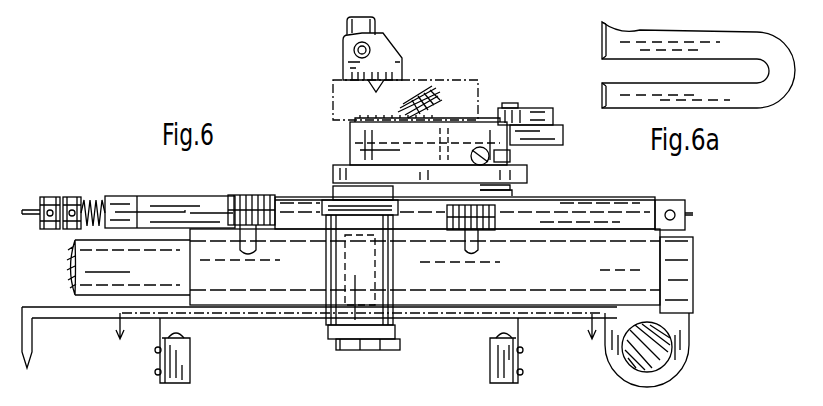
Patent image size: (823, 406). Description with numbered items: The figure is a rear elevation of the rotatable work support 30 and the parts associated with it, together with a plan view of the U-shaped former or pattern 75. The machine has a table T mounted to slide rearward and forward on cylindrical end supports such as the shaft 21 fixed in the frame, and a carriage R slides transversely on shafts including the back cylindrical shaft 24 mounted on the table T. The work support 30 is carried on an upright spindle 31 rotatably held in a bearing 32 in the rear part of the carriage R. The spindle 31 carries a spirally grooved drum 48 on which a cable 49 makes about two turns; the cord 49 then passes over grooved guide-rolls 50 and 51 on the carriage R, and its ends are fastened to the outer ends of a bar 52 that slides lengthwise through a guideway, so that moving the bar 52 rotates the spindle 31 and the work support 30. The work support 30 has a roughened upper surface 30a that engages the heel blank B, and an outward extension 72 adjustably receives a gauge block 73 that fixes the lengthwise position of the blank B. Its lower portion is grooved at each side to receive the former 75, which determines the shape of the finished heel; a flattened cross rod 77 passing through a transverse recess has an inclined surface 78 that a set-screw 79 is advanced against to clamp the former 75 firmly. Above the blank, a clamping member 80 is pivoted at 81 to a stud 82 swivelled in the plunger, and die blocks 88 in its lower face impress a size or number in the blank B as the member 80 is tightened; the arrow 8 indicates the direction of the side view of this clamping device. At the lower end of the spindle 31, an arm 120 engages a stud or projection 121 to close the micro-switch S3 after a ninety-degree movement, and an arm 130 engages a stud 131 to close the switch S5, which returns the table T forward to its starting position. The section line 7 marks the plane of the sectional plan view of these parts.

In FIG. 6, the arrow 8 is at (268, 76).
In FIG. 6, the stud 82 is at (346, 22).
In FIG. 6, the clamping member 80 is at (386, 49).
In FIG. 6, the pivot 81 is at (353, 51).
In FIG. 6, the die blocks 88 is at (378, 95).
In FIG. 6, the heel blank B is at (424, 86).
In FIG. 6, the roughened upper surface 30a is at (356, 120).
In FIG. 6, the work support 30 is at (350, 152).
In FIG. 6, the inclined surface 78 is at (430, 177).
In FIG. 6, the flattened cross rod 77 is at (471, 157).
In FIG. 6, the set-screw 79 is at (511, 156).
In FIG. 6, the gauge block 73 is at (530, 108).
In FIG. 6, the outward extension 72 is at (564, 133).
In FIG. 6, the former or pattern 75 is at (513, 196).
In FIG. 6a, the former or pattern 75 is at (728, 99).
In FIG. 6, the cable 49 is at (196, 195).
In FIG. 6, the grooved guide-roll 51 is at (230, 195).
In FIG. 6, the grooved guide-roll 50 is at (516, 196).
In FIG. 6, the bar 52 is at (668, 204).
In FIG. 6, the spirally grooved drum 48 is at (326, 222).
In FIG. 6, the bearing 32 is at (393, 280).
In FIG. 6, the arm 120 is at (395, 330).
In FIG. 6, the arm 130 is at (396, 351).
In FIG. 6, the upright spindle 31 is at (357, 351).
In FIG. 6, the back cylindrical shaft 24 is at (76, 258).
In FIG. 6, the carriage R is at (237, 288).
In FIG. 6, the table T is at (82, 320).
In FIG. 6, the cylindrical end support or shaft 21 is at (672, 350).
In FIG. 6, the section line 7— 7 is at (356, 339).
In FIG. 6, the switch S5 is at (190, 374).
In FIG. 6, the stud 131 is at (182, 336).
In FIG. 6, the micro-switch S3 is at (490, 366).
In FIG. 6, the stud or projection 121 is at (494, 336).